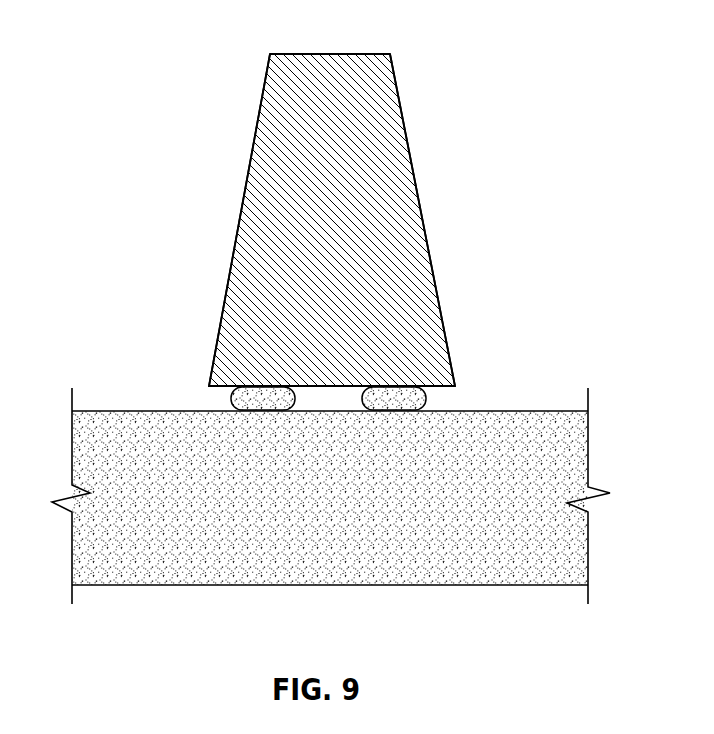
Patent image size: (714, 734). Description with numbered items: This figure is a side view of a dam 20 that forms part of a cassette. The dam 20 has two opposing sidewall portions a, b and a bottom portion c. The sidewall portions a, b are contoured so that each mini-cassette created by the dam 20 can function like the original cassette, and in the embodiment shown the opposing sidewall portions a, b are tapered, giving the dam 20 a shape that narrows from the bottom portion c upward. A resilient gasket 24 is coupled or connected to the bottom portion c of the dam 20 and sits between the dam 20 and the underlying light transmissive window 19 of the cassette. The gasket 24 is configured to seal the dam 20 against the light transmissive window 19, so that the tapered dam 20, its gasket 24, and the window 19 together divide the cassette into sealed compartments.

The light transmissive window 19 is at (183, 560).
The dam 20 is at (114, 38).
The resilient gasket 24 is at (246, 398).
The sidewall portion a is at (205, 182).
The sidewall portion b is at (473, 182).
The bottom portion c is at (330, 386).